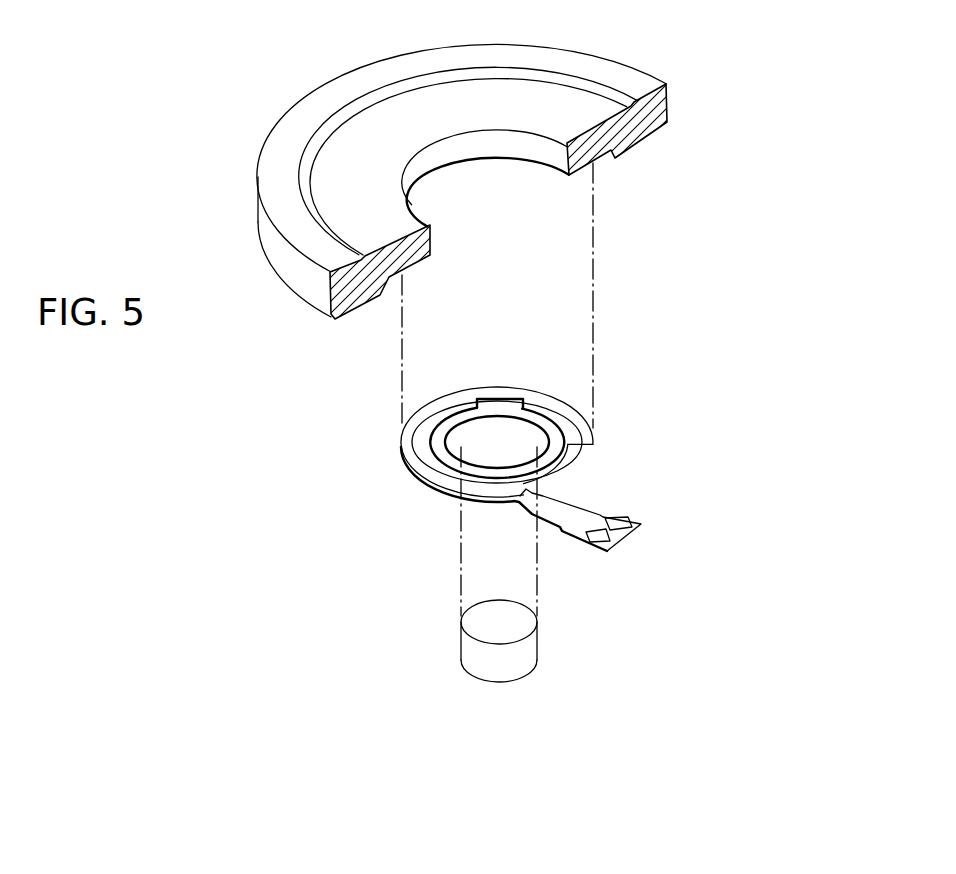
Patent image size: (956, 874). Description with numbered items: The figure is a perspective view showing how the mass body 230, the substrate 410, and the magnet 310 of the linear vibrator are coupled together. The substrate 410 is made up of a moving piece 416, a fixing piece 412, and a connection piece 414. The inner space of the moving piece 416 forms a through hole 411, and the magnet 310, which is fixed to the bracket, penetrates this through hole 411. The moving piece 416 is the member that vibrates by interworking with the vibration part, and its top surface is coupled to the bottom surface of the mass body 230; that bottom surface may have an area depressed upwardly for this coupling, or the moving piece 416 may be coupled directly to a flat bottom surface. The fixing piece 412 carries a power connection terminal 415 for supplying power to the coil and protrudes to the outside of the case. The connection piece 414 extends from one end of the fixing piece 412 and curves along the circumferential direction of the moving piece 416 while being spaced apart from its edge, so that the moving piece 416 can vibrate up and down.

The mass body 230 is at (657, 112).
The magnet 310 is at (528, 648).
The substrate 410 is at (496, 485).
The through hole 411 is at (484, 462).
The fixing piece 412 is at (578, 532).
The connection piece 414 is at (433, 480).
The power connection terminal 415 is at (613, 521).
The moving piece 416 is at (553, 415).